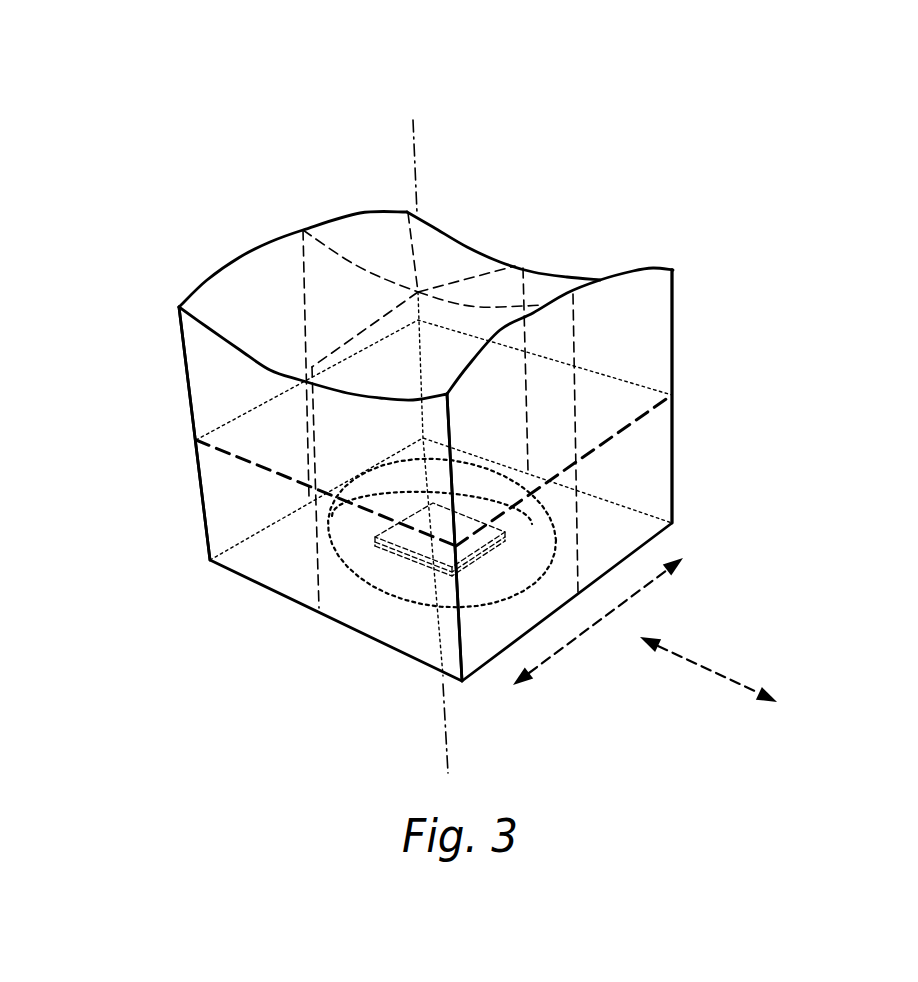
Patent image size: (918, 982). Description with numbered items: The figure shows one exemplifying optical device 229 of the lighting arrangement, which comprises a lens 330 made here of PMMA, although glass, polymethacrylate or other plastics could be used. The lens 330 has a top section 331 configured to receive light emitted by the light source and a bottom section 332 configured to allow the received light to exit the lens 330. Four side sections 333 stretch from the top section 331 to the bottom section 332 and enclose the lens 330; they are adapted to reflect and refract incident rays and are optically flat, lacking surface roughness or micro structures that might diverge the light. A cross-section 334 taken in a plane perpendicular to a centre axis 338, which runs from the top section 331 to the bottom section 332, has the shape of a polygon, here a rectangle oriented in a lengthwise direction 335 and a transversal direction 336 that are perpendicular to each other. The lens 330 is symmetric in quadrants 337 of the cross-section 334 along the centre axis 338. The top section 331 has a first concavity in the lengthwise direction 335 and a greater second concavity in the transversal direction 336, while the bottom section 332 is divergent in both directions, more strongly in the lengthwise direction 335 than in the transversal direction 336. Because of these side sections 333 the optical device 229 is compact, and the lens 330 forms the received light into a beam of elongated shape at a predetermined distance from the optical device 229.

The optical device 229 is at (343, 100).
The lens 330 is at (318, 213).
The top section 331 is at (330, 507).
The bottom section 332 is at (242, 282).
The side sections 333 is at (655, 308).
The cross-section 334 is at (635, 422).
The lengthwise direction 335 is at (693, 662).
The transversal direction 336 is at (573, 640).
The quadrants 337 is at (547, 283).
The centre axis 338 is at (418, 170).